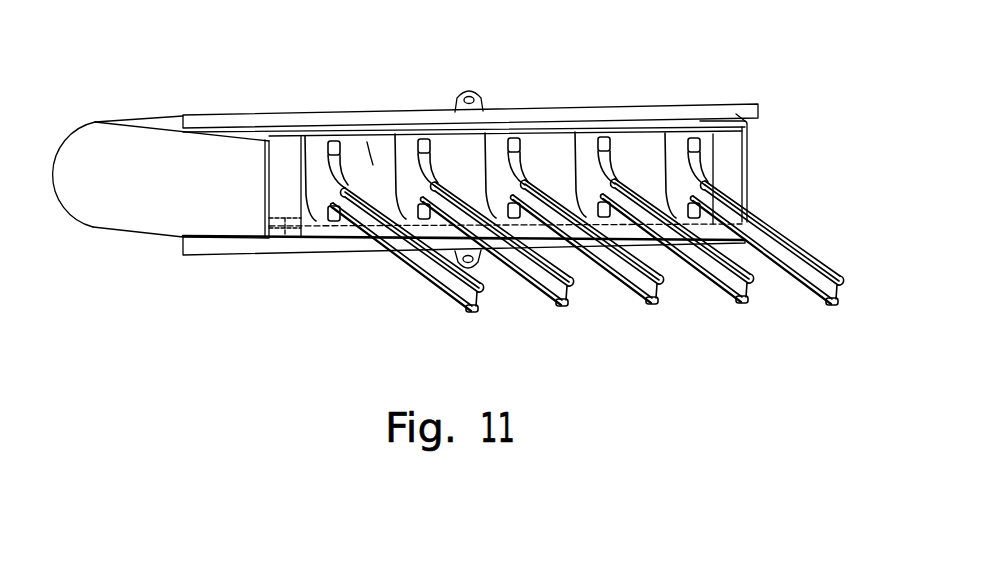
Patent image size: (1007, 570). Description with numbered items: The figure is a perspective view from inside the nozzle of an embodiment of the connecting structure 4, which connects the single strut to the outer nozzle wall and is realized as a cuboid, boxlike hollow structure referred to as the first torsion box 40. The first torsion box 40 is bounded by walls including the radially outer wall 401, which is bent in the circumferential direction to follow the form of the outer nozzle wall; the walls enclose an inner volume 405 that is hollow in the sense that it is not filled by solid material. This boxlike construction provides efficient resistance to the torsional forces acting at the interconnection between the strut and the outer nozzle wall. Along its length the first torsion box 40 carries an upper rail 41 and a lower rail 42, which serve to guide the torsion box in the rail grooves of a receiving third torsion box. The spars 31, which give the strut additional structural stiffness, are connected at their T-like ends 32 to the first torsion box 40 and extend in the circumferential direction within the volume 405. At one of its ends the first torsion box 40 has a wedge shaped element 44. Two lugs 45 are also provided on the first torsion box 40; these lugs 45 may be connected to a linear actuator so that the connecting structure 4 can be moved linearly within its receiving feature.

The connecting structure 4 is at (236, 262).
The first torsion box 40 is at (603, 110).
The upper rail 41 is at (264, 110).
The inner volume 405 is at (370, 160).
The lugs 45 is at (468, 88).
The wedge shaped element 44 is at (147, 213).
The radially outer wall 401 is at (285, 212).
The T-like ends 32 is at (318, 200).
The spars 31 is at (438, 274).
The lower rail 42 is at (379, 240).